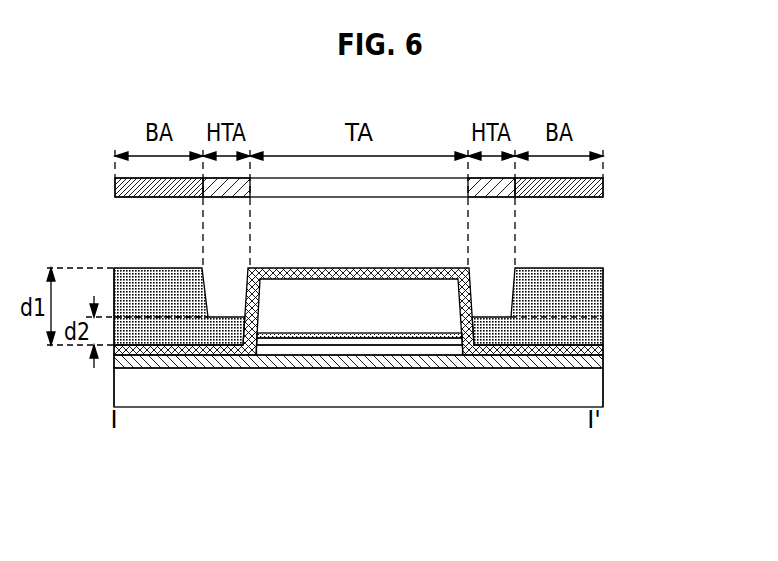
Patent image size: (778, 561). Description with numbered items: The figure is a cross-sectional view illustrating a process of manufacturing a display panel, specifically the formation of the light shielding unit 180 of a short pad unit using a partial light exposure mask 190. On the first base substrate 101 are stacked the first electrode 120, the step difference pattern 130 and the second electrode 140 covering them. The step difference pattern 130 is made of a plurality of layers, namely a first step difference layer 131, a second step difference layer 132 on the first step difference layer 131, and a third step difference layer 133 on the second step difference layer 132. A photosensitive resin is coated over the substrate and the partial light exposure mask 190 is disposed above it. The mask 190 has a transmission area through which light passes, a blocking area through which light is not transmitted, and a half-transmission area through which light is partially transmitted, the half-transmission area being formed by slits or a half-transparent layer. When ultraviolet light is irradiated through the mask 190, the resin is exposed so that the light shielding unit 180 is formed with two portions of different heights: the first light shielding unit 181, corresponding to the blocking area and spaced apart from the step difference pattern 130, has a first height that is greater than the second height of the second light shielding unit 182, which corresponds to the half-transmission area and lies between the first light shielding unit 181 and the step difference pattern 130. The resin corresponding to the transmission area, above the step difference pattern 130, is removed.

The first base substrate 101 is at (588, 387).
The first electrode 120 is at (218, 360).
The step difference pattern 130 is at (360, 411).
The first step difference layer 131 is at (295, 350).
The second step difference layer 132 is at (347, 338).
The third step difference layer 133 is at (397, 320).
The second electrode 140 is at (429, 274).
The light shielding unit 180 is at (426, 308).
The first light shielding unit 181 is at (572, 288).
The second light shielding unit 182 is at (497, 332).
The partial light exposure mask 190 is at (604, 187).